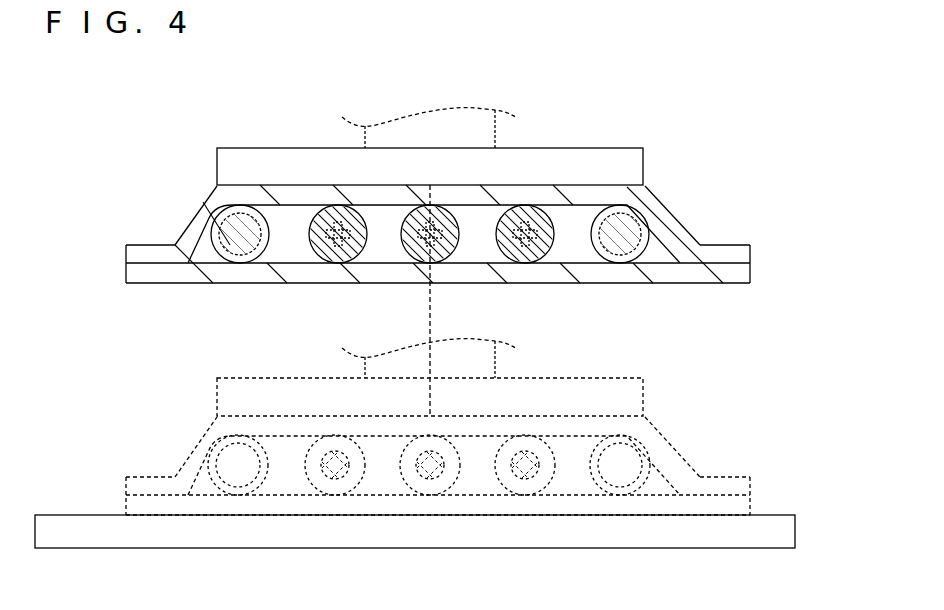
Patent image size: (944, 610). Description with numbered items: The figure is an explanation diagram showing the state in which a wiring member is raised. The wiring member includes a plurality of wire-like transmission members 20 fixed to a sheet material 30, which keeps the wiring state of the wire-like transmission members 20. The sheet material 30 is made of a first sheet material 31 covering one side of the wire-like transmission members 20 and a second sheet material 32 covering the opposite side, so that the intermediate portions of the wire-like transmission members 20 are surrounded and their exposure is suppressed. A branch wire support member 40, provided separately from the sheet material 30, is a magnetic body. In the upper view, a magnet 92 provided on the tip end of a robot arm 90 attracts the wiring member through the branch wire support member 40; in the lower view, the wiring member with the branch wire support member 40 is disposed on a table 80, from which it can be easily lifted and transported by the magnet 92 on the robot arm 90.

The wire-like transmission member 20 is at (400, 230).
The sheet material 30 is at (798, 238).
The first sheet material 31 is at (745, 273).
The second sheet material 32 is at (745, 253).
The branch wire support member 40 is at (192, 232).
The table 80 is at (457, 537).
The robot arm 90 is at (478, 130).
The magnet 92 is at (607, 157).